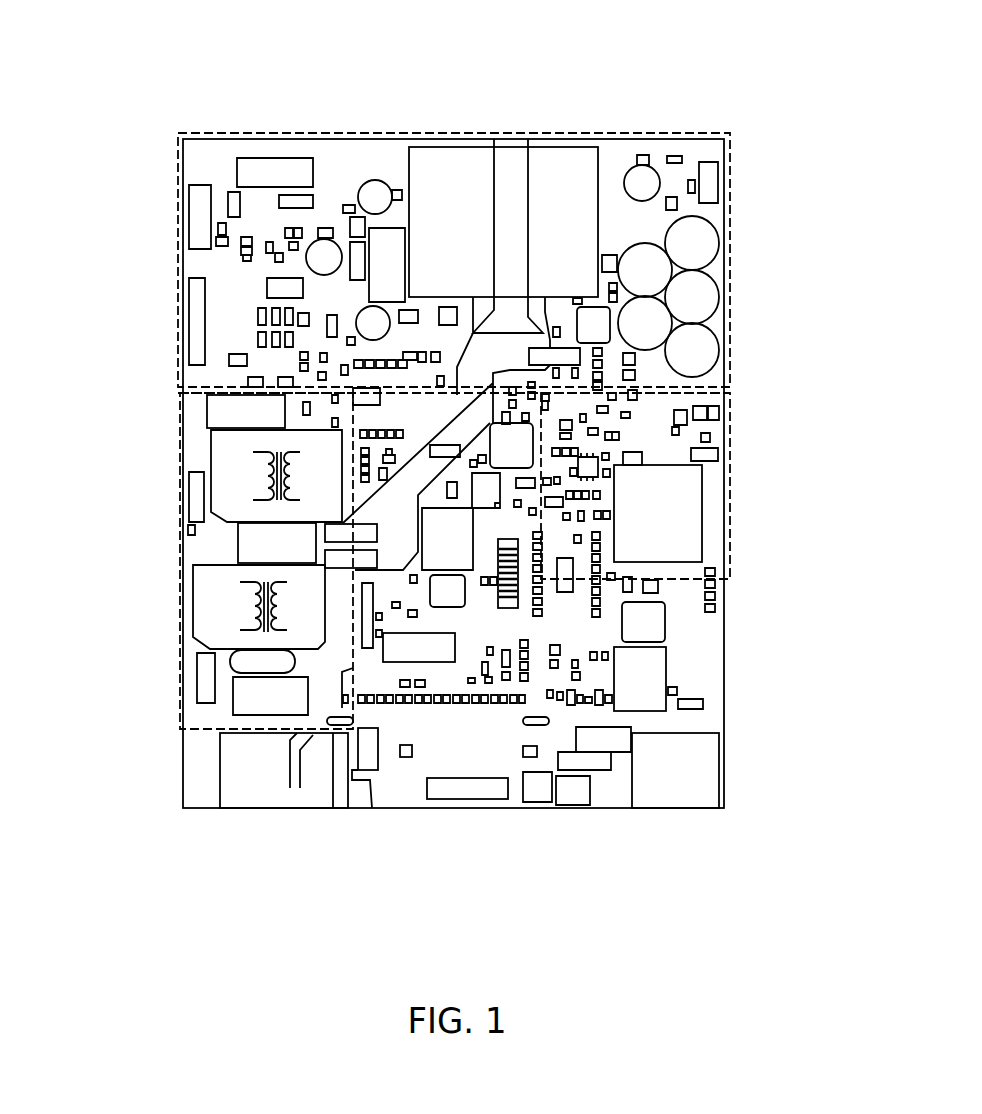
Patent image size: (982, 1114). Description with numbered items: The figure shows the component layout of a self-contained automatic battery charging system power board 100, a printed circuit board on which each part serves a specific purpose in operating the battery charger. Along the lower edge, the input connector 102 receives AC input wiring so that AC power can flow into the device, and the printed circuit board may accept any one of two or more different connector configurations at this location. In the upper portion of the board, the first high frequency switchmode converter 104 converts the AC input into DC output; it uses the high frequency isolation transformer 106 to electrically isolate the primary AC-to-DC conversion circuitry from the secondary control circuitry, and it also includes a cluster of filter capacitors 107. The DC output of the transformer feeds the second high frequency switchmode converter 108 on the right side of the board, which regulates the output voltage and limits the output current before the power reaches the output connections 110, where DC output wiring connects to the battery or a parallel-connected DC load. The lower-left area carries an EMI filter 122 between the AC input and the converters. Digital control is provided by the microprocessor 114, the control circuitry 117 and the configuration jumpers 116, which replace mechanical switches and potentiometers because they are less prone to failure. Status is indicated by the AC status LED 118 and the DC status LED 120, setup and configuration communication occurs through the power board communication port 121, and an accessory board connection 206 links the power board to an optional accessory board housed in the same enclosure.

The power board 100 is at (766, 856).
The input connector 102 is at (91, 762).
The first high frequency switchmode converter 104 is at (62, 226).
The high frequency isolation transformer 106 is at (531, 49).
The filter capacitors 107 is at (800, 266).
The second high frequency switchmode converter 108 is at (827, 457).
The output connections 110 is at (823, 726).
The microprocessor 114 is at (78, 669).
The jumpers 116 is at (478, 800).
The control circuitry 117 is at (787, 631).
The LED 118 is at (398, 758).
The LED 120 is at (535, 760).
The power board communication port 121 is at (357, 753).
The EMI filter 122 is at (178, 502).
The accessory board connection 206 is at (518, 593).